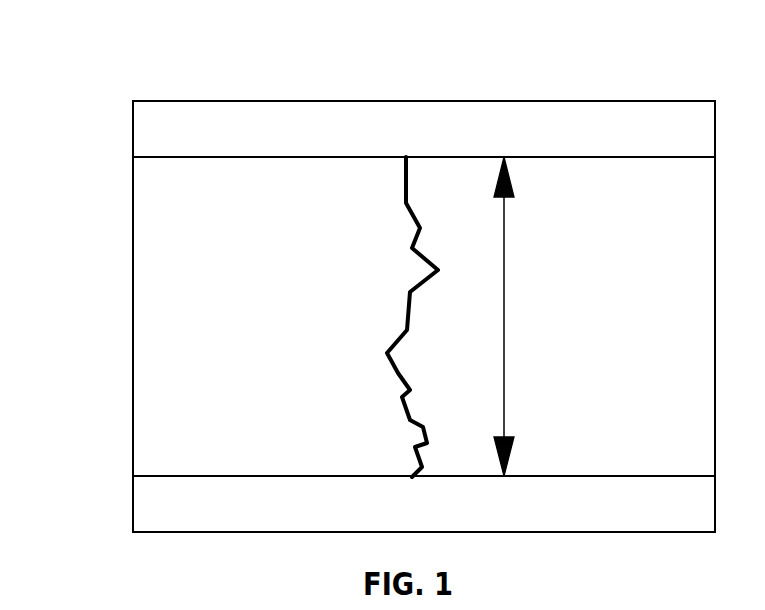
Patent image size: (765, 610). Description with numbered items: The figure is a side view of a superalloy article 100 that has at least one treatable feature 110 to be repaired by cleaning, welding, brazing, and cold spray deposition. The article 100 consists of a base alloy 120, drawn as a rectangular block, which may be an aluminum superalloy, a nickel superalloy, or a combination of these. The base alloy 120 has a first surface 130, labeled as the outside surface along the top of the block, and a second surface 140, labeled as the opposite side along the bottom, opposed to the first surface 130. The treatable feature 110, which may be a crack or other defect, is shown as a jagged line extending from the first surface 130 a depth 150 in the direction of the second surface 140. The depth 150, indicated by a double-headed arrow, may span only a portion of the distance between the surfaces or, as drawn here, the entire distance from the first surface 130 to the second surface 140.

The superalloy article 100 is at (177, 71).
The treatable feature 110 is at (405, 310).
The base alloy 120 is at (190, 371).
The first surface 130 is at (152, 130).
The second surface 140 is at (153, 502).
The depth 150 is at (505, 310).